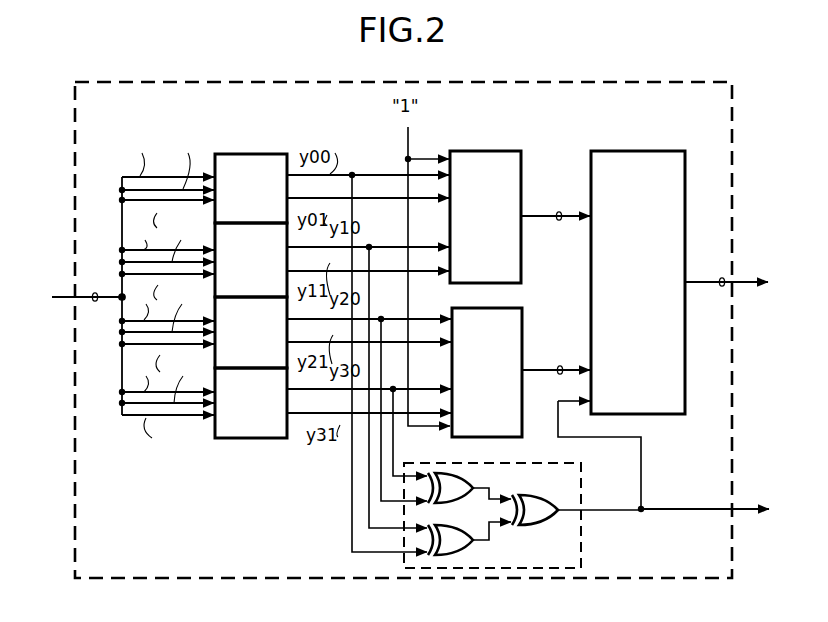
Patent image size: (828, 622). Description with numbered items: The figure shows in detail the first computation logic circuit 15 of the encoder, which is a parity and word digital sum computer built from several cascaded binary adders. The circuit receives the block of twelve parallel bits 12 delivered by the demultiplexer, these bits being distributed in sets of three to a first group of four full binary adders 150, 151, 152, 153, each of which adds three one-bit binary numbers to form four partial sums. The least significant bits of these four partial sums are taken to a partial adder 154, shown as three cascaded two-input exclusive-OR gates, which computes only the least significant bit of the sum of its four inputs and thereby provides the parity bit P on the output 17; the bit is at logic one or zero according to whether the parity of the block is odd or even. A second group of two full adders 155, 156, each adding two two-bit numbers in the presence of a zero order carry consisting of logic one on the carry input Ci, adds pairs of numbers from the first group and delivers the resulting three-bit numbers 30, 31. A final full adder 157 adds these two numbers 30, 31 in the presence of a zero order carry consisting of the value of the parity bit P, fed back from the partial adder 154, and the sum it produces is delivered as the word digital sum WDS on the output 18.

The first computation logic circuit 15 is at (150, 100).
The block of parallel bits 12 is at (133, 296).
The full binary adder 150 is at (242, 158).
The full binary adder 151 is at (251, 260).
The full binary adder 152 is at (251, 332).
The full binary adder 153 is at (262, 442).
The partial adder 154 is at (568, 553).
The full adder 155 is at (483, 160).
The full adder 156 is at (510, 318).
The final full adder 157 is at (628, 160).
The output of adder 155 30 is at (536, 215).
The output of adder 156 31 is at (548, 350).
The parity output 17 is at (745, 506).
The word digital sum output 18 is at (742, 280).